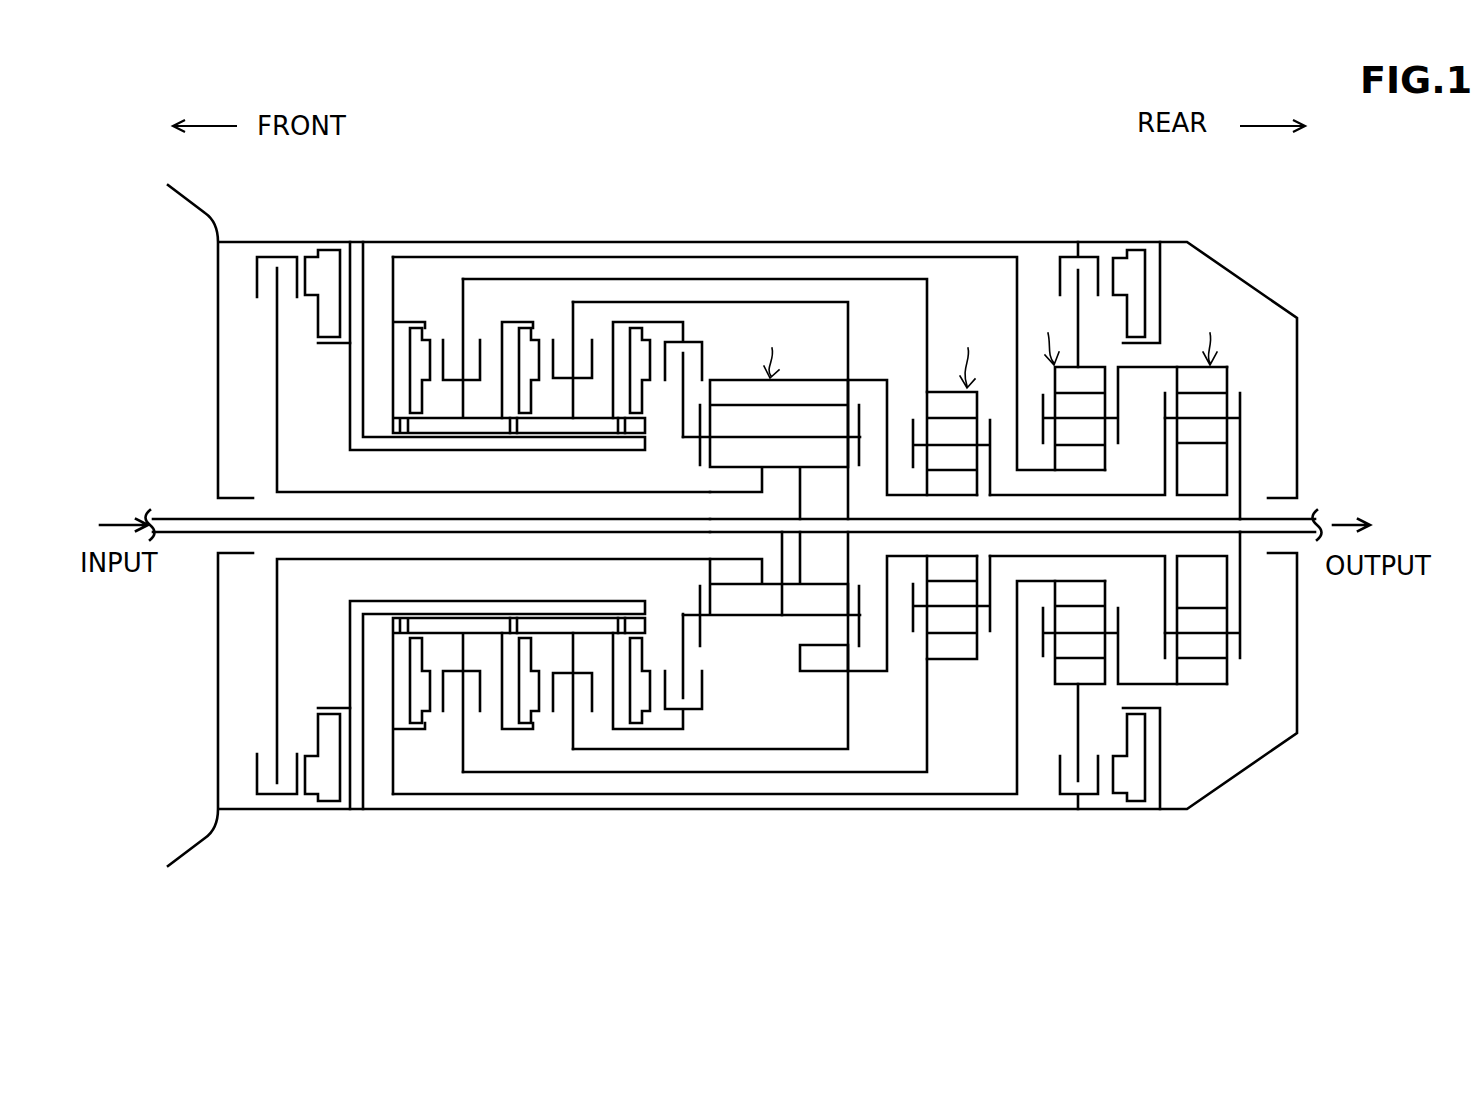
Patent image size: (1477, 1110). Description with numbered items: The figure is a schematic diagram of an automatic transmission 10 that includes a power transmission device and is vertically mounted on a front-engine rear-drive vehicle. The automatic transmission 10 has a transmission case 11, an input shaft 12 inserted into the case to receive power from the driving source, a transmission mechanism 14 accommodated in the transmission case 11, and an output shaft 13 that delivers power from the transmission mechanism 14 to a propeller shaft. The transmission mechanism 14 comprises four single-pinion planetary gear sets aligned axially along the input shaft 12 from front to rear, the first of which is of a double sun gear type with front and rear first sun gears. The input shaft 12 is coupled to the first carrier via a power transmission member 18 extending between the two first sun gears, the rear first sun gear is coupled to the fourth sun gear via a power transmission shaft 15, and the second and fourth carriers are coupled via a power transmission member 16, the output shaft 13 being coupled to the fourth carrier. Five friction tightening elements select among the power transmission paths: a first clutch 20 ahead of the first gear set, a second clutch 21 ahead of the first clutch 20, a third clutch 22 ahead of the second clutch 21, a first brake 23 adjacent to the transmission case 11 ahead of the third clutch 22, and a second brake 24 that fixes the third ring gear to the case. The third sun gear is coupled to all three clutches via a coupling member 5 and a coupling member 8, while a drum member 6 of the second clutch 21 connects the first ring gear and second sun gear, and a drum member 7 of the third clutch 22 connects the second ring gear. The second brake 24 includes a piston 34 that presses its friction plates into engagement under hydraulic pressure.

The coupling member 5 is at (626, 256).
The drum member 6 is at (661, 301).
The drum member 7 is at (761, 278).
The coupling member 8 is at (583, 422).
The automatic transmission 10 is at (936, 172).
The transmission case 11 is at (806, 240).
The input shaft 12 is at (200, 517).
The output shaft 13 is at (1300, 517).
The transmission mechanism 14 is at (894, 293).
The power transmission shaft 15 is at (918, 519).
The power transmission member 16 is at (1058, 496).
The power transmission member 18 is at (784, 597).
The first clutch 20 is at (706, 319).
The second clutch 21 is at (558, 305).
The third clutch 22 is at (448, 305).
The first brake 23 is at (308, 366).
The second brake 24 is at (1052, 254).
The piston 34 is at (1136, 252).